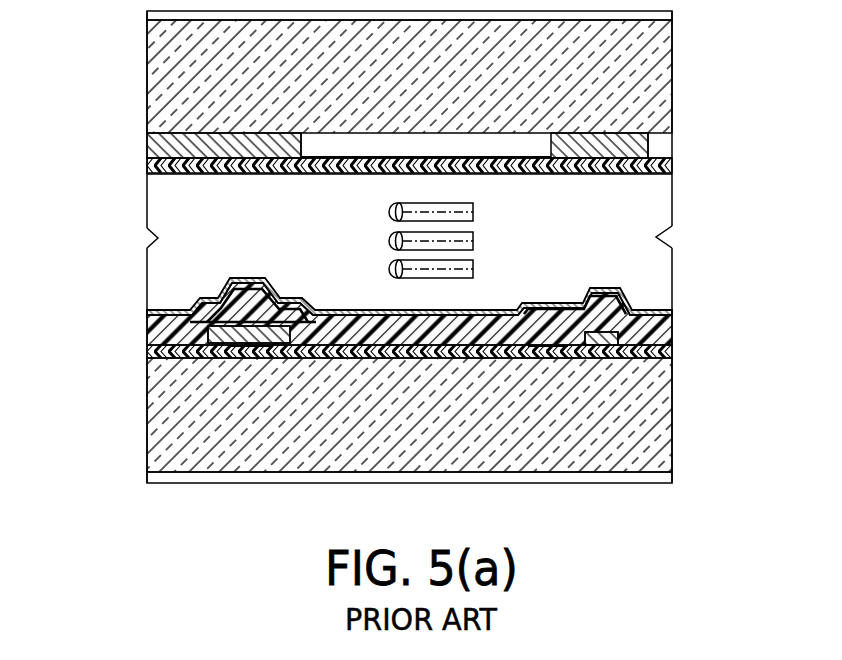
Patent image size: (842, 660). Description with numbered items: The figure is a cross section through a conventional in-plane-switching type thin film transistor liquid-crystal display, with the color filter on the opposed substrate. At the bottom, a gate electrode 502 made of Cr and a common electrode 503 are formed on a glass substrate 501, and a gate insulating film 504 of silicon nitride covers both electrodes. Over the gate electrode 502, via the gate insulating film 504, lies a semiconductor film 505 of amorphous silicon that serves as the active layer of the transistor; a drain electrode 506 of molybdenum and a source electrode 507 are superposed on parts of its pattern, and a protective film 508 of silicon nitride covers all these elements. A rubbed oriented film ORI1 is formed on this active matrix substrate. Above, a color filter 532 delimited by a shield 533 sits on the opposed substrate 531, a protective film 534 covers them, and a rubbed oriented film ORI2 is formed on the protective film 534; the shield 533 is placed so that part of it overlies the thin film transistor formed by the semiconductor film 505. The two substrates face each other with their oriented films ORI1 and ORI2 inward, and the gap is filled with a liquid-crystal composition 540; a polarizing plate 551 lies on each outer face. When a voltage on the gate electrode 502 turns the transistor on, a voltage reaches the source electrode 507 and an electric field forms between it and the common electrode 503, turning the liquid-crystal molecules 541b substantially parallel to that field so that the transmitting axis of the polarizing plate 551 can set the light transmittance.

The glass substrate 501 is at (672, 422).
The gate electrode 502 is at (250, 352).
The common electrode 503 is at (548, 356).
The gate insulating film 504 is at (672, 350).
The semiconductor film 505 is at (255, 283).
The drain electrode 506 is at (214, 298).
The source electrode 507 is at (355, 302).
The protective film 508 is at (672, 323).
The opposed substrate 531 is at (672, 80).
The color filter 532 is at (518, 176).
The shield 533 is at (208, 176).
The protective film 534 is at (672, 160).
The liquid-crystal composition 540 is at (664, 238).
The liquid-crystal molecules 541b is at (473, 212).
The polarizing plate 551 is at (672, 14).
The oriented film ORI1 is at (147, 303).
The oriented film ORI2 is at (672, 173).